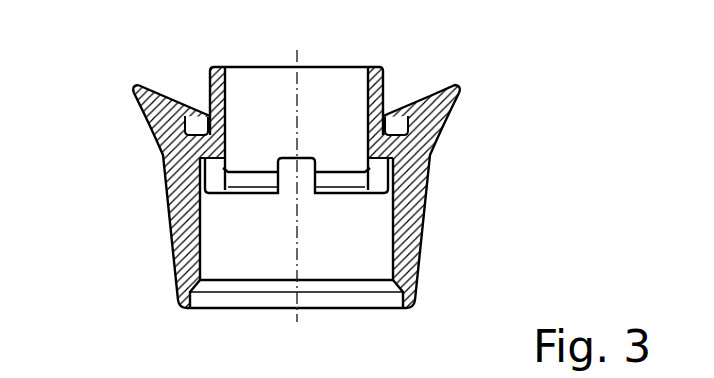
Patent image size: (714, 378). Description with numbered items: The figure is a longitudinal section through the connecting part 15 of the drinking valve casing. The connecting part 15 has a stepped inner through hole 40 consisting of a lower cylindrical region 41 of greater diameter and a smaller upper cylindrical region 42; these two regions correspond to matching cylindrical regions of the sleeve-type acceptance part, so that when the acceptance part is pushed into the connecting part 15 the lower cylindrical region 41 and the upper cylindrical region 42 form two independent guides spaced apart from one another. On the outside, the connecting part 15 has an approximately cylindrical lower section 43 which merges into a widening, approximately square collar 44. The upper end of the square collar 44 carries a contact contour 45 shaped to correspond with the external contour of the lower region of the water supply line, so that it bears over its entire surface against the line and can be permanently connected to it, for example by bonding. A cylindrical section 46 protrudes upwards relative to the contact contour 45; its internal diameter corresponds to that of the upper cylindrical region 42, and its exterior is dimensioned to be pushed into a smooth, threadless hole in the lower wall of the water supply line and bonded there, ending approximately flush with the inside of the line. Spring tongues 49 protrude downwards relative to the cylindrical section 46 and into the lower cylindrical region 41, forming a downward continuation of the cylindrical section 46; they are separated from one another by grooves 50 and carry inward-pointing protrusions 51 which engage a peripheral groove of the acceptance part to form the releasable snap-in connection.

The connecting part 15 is at (313, 181).
The through hole 40 is at (257, 258).
The lower cylindrical region 41 is at (203, 227).
The upper cylindrical region 42 is at (365, 97).
The lower section 43 is at (417, 253).
The square collar 44 is at (449, 104).
The contact contour 45 is at (428, 100).
The cylindrical section 46 is at (210, 88).
The spring tongues 49 is at (255, 177).
The grooves 50 is at (285, 173).
The protrusions 51 is at (230, 173).